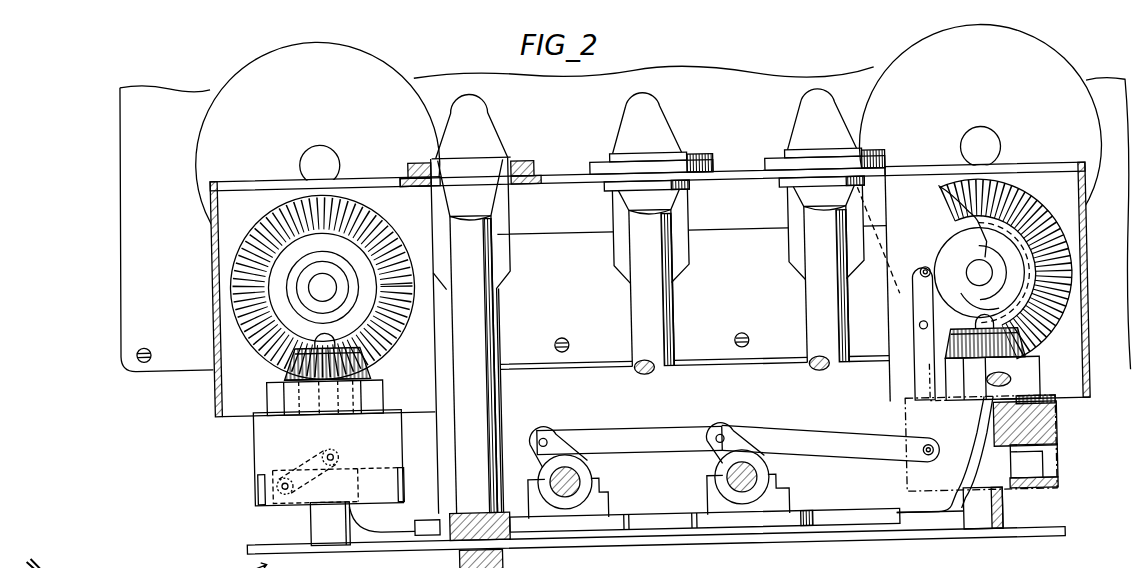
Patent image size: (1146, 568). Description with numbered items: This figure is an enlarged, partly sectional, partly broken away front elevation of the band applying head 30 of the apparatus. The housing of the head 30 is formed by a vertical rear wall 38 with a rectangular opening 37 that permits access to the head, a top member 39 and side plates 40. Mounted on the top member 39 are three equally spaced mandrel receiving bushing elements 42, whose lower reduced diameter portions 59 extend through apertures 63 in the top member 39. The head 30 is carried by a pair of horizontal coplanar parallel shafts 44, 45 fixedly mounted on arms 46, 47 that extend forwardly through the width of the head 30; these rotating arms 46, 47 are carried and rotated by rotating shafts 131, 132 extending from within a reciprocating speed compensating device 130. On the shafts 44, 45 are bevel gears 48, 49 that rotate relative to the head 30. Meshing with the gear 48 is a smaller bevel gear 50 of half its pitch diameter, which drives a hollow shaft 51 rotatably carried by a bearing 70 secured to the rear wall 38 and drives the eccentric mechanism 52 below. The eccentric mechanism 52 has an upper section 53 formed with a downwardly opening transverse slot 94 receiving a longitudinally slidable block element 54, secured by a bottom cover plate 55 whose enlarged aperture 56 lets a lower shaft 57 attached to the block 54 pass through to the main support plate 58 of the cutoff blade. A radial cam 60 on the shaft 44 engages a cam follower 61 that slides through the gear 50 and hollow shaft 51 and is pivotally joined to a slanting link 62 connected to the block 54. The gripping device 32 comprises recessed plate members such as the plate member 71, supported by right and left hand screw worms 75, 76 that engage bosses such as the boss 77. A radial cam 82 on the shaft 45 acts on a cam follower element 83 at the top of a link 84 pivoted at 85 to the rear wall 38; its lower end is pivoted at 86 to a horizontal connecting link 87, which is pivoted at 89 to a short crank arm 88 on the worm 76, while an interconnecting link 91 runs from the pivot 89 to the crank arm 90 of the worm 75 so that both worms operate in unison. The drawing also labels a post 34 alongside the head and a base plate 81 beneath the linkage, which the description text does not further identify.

The reciprocating speed compensating device 130 is at (93, 231).
The arm 46 is at (213, 132).
The arm 47 is at (1079, 85).
The rotating shaft 131 is at (329, 148).
The rotating shaft 132 is at (985, 142).
The head 30 is at (183, 399).
The side plates 40 is at (216, 297).
The top member 39 is at (579, 173).
The mandrel receiving bushing element 42 is at (524, 157).
The aperture 63 is at (434, 181).
The lower reduced diameter portion 59 is at (534, 181).
The rectangular opening 37 is at (445, 425).
The plunger 34 is at (511, 408).
The vertical rear wall 38 is at (756, 213).
The radial cam 60 is at (322, 243).
The shaft 44 is at (320, 276).
The bevel gear 48 is at (292, 328).
The bevel gear 50 is at (370, 366).
The bearing 70 is at (266, 391).
The cam follower 61 is at (280, 362).
The hollow shaft 51 is at (359, 388).
The eccentric mechanism 52 is at (238, 435).
The link 62 is at (255, 465).
The transverse slot 94 is at (247, 481).
The lower shaft 57 is at (311, 514).
The plate member 71 is at (428, 515).
The main support plate 58 is at (346, 538).
The base plate 81 is at (681, 529).
The boss 77 is at (690, 502).
The screw worm 75 is at (587, 474).
The screw worm 76 is at (762, 485).
The crank arm 90 is at (538, 454).
The pivot 89 is at (723, 432).
The crank arm 88 is at (710, 457).
The interconnecting link 91 is at (633, 435).
The connecting link 87 is at (833, 436).
The pivot 86 is at (923, 460).
The gripping device 32 is at (700, 414).
The bevel gear 49 is at (1041, 319).
The radial cam 82 is at (977, 262).
The shaft 45 is at (977, 279).
The link 84 is at (913, 306).
The cam follower element 83 is at (927, 271).
The pivot 85 is at (920, 334).
The upper section 53 is at (1055, 429).
The block element 54 is at (1055, 469).
The bottom cover plate 55 is at (1042, 499).
The enlarged aperture 56 is at (1000, 508).